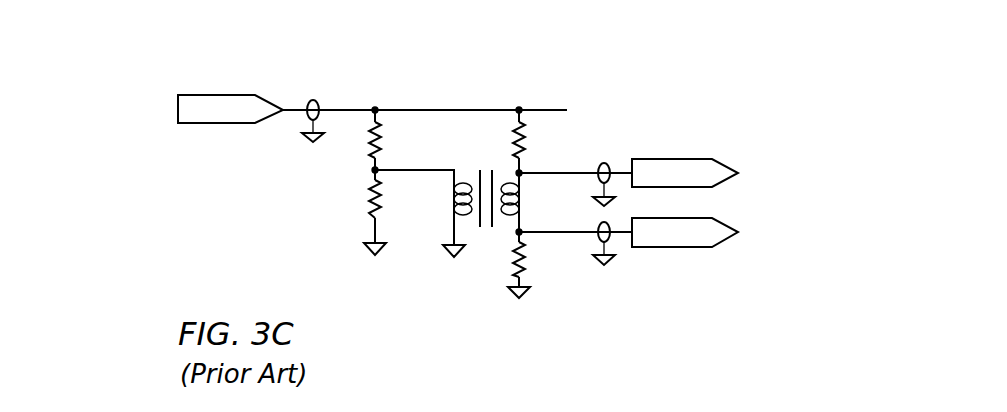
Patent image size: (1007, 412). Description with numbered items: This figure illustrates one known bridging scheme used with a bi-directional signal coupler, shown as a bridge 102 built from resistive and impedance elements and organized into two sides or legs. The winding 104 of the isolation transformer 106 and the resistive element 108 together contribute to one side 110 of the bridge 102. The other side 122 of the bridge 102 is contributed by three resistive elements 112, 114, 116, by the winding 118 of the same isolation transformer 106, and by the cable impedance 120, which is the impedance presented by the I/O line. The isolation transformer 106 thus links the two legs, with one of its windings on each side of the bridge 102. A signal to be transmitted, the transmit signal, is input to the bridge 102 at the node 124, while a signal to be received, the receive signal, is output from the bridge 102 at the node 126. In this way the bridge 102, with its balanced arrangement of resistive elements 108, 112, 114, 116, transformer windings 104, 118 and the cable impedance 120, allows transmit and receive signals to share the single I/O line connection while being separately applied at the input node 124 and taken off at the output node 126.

The bridge 102 is at (633, 93).
The winding 104 is at (522, 212).
The isolation transformer 106 is at (478, 184).
The resistive element 108 is at (523, 268).
The one side 110 is at (617, 325).
The resistive element 112 is at (525, 142).
The resistive element 114 is at (370, 161).
The resistive element 116 is at (370, 219).
The winding 118 is at (453, 203).
The cable impedance 120 is at (685, 158).
The other side 122 is at (402, 86).
The node 124 is at (195, 124).
The node 126 is at (685, 248).